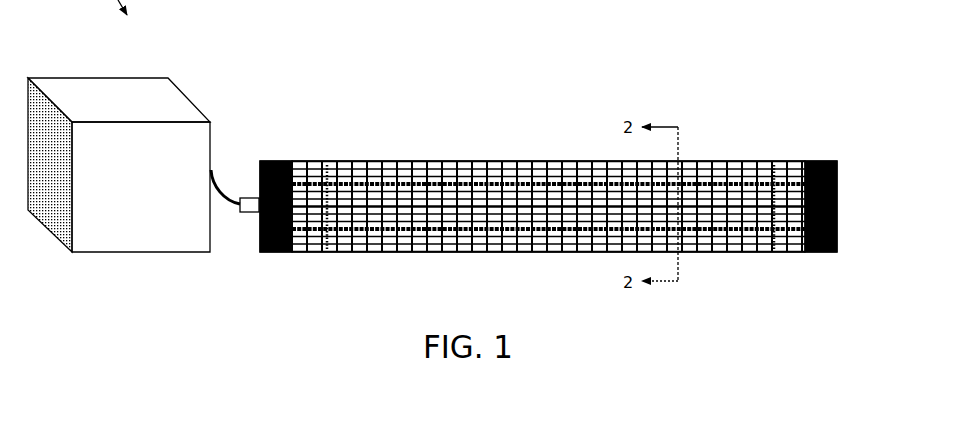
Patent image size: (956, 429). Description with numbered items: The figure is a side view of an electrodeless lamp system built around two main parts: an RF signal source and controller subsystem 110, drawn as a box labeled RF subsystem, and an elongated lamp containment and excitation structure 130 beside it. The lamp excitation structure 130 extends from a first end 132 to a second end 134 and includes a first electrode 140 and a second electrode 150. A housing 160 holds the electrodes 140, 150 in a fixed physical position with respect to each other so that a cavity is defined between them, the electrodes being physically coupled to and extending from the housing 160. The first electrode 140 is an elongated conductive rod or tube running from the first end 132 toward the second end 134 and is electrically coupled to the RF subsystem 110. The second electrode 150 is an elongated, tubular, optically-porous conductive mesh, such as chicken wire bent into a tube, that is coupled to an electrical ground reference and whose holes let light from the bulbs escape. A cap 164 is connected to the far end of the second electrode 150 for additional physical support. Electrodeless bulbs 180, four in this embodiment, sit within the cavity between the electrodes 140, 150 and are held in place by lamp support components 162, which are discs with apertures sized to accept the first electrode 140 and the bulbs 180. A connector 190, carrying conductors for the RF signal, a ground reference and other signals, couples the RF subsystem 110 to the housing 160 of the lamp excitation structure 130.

The RF signal source and controller subsystem 110 is at (127, 96).
The lamp containment and excitation structure 130 is at (562, 175).
The first end 132 is at (258, 250).
The second end 134 is at (837, 253).
The first electrode 140 is at (556, 162).
The second electrode 150 is at (523, 162).
The housing 160 is at (280, 161).
The lamp support components 162 is at (327, 165).
The cap 164 is at (820, 162).
The electrodeless bulbs 180 is at (447, 163).
The connector 190 is at (237, 207).